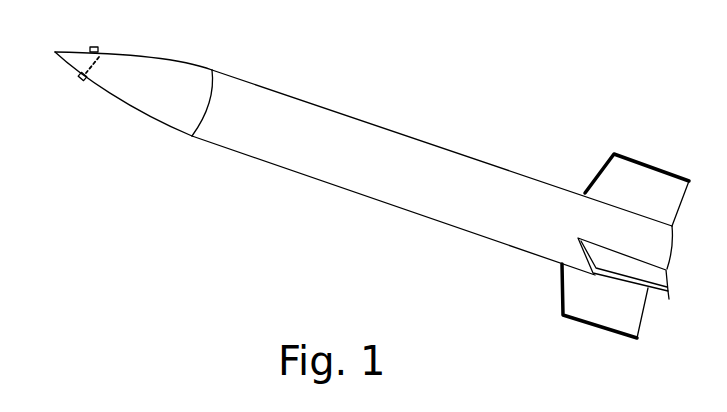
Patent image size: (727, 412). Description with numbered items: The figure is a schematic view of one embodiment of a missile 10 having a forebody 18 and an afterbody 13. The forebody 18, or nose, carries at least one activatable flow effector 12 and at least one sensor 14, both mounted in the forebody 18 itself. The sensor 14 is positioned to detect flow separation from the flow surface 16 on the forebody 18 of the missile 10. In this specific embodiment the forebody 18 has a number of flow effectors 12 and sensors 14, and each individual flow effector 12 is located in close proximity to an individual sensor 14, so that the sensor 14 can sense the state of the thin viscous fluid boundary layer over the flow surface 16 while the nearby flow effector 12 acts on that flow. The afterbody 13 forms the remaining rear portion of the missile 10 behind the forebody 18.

The missile 10 is at (375, 123).
The activatable flow effector 12 is at (82, 80).
The afterbody 13 is at (532, 203).
The sensor 14 is at (97, 80).
The flow surface 16 is at (117, 68).
The forebody 18 is at (195, 64).